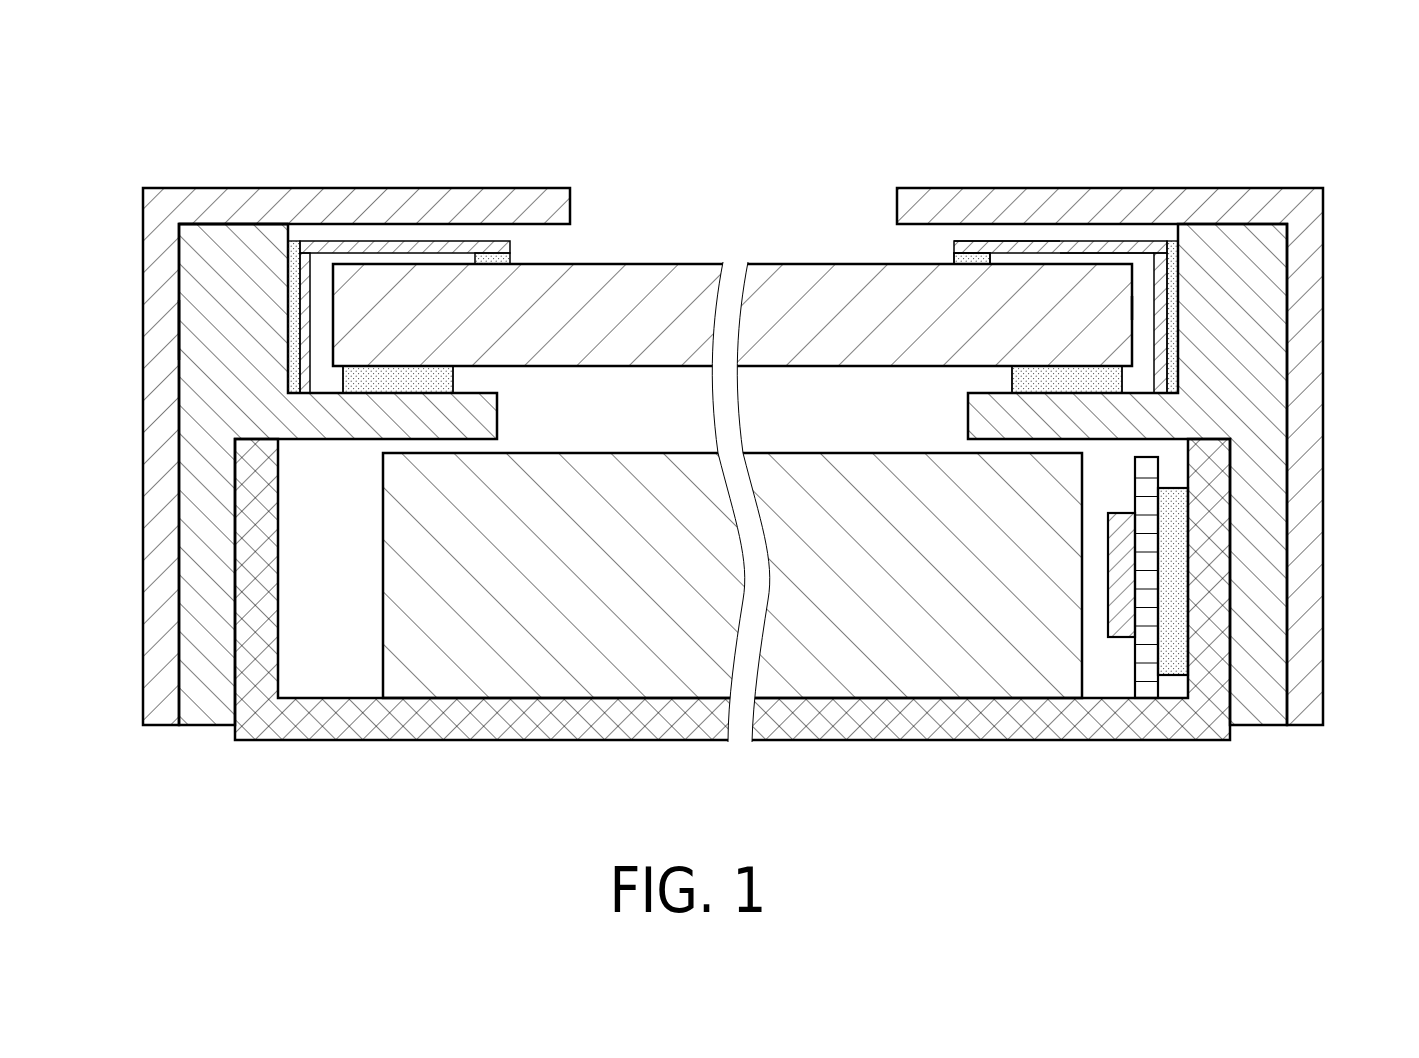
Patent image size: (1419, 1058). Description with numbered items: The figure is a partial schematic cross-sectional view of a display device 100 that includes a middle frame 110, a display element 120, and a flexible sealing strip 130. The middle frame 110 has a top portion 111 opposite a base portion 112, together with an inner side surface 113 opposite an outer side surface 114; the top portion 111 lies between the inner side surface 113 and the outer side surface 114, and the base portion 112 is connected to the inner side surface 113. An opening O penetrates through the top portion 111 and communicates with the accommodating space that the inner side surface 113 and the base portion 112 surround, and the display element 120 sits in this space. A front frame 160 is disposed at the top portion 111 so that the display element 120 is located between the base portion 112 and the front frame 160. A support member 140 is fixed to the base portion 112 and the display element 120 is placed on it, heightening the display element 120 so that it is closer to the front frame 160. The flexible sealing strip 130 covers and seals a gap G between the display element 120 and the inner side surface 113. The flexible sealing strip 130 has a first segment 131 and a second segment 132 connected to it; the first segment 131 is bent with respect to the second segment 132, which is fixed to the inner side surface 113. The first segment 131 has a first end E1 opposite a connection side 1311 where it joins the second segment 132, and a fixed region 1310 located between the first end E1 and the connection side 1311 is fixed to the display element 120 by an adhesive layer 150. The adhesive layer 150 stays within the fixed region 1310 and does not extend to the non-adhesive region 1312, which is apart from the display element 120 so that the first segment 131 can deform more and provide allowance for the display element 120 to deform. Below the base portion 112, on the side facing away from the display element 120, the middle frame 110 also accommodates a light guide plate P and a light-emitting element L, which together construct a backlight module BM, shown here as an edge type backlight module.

The display device 100 is at (718, 447).
The middle frame 110 is at (212, 283).
The top portion 111 is at (254, 236).
The base portion 112 is at (355, 423).
The inner side surface 113 is at (287, 355).
The outer side surface 114 is at (192, 329).
The display element 120 is at (808, 290).
The flexible sealing strip 130 is at (844, 215).
The first segment 131 is at (1087, 215).
The fixed region 1310 is at (975, 246).
The connection side 1311 is at (1188, 239).
The non-adhesive region 1312 is at (1068, 247).
The second segment 132 is at (1160, 336).
The support member 140 is at (1100, 378).
The adhesive layer 150 is at (954, 258).
The front frame 160 is at (1308, 280).
The first end E1 is at (956, 254).
The gap G is at (1146, 308).
The opening O is at (663, 223).
The light guide plate P is at (1005, 648).
The light-emitting element L is at (1118, 583).
The backlight module BM is at (785, 655).